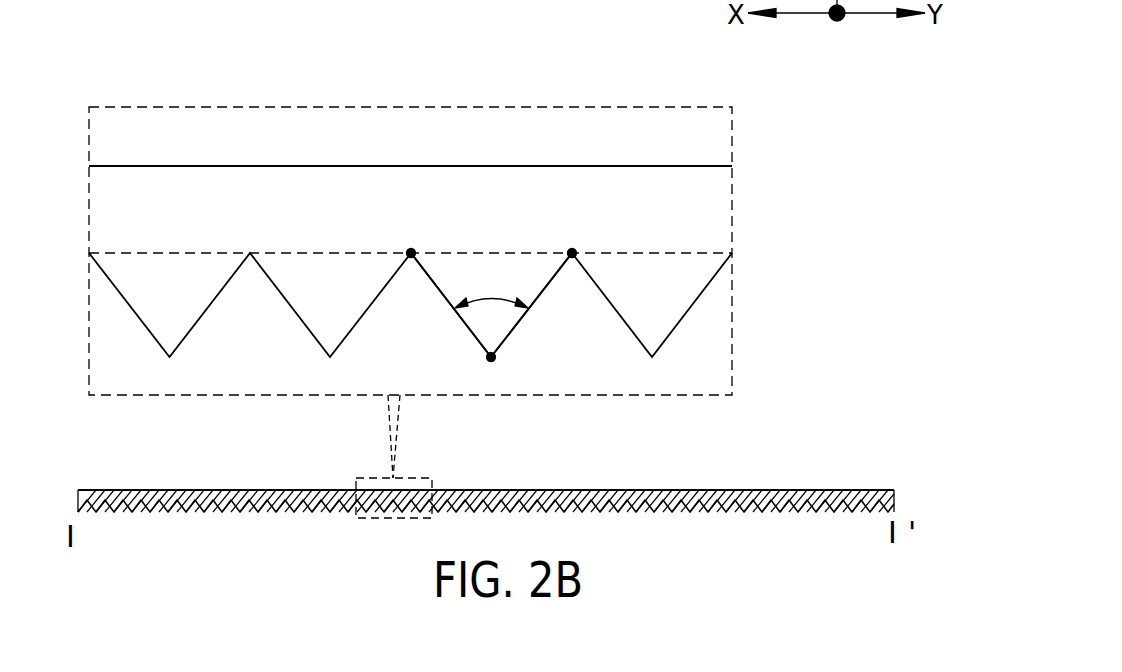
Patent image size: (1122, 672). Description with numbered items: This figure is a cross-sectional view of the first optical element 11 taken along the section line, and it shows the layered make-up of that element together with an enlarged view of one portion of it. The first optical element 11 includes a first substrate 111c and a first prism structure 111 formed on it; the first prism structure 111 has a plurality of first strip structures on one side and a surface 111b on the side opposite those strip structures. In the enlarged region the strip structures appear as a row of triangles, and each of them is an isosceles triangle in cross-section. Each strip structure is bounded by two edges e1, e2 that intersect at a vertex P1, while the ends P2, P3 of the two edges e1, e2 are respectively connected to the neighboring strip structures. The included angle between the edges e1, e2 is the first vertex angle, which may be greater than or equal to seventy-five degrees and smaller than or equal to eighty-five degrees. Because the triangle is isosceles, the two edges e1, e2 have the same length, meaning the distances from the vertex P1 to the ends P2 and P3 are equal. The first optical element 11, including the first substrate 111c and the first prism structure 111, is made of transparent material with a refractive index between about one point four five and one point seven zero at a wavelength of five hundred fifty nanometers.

The first optical element 11 is at (88, 463).
The first prism structure 111 is at (653, 303).
The surface 111b is at (652, 166).
The first substrate 111c is at (723, 207).
The vertex P1 is at (493, 373).
The end P2 is at (412, 238).
The end P3 is at (574, 238).
The edge e1 is at (447, 303).
The edge e2 is at (539, 296).